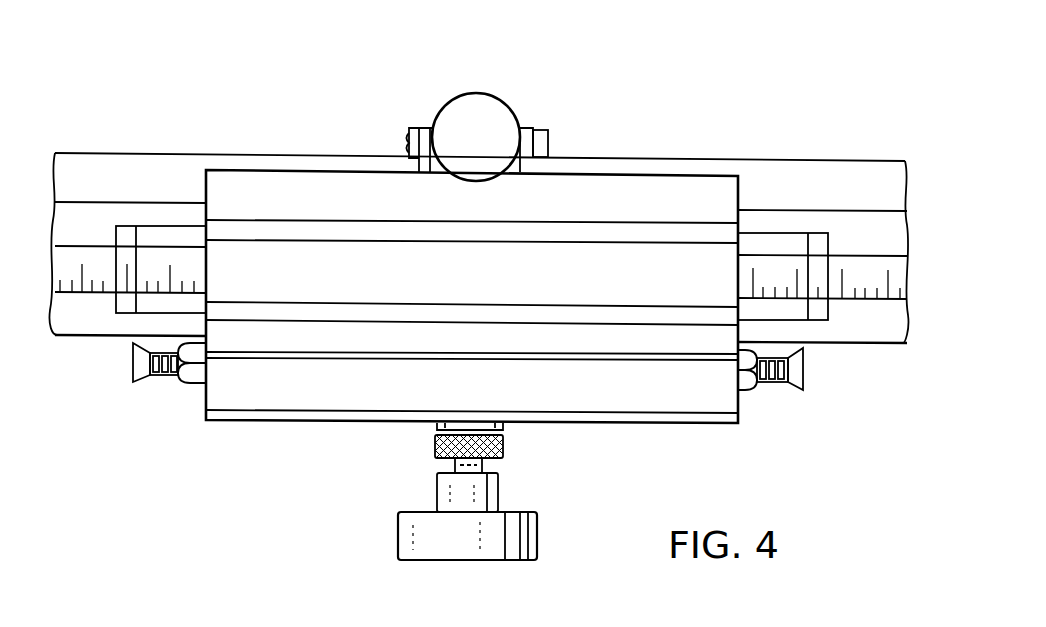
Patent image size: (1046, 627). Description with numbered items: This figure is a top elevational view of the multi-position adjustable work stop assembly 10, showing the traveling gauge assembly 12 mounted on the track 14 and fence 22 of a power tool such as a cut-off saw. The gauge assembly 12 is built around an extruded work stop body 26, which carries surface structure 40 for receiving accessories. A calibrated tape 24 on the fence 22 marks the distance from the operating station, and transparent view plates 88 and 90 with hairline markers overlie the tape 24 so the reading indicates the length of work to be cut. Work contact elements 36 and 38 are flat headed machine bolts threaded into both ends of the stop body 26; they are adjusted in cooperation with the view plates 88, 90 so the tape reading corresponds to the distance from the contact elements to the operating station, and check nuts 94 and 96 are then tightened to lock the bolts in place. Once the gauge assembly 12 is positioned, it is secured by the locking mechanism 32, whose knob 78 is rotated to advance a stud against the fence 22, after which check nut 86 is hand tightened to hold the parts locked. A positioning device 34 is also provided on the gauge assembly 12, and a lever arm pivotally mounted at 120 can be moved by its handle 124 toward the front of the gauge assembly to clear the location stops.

The work stop assembly 10 is at (480, 307).
The traveling gauge assembly 12 is at (472, 344).
The track 14 is at (259, 142).
The fence 22 is at (868, 325).
The calibrated tape 24 is at (92, 263).
The work stop body 26 is at (652, 397).
The locking mechanism 32 is at (490, 493).
The positioning device 34 is at (427, 127).
The work contact element 36 is at (143, 383).
The work contact element 38 is at (797, 390).
The surface structure 40 is at (436, 228).
The knob 78 is at (527, 538).
The check nut 86 is at (437, 445).
The transparent view plate 88 is at (777, 240).
The transparent view plate 90 is at (177, 237).
The check nut 94 is at (752, 390).
The check nut 96 is at (190, 380).
The pivot mount 120 is at (550, 140).
The handle 124 is at (503, 118).